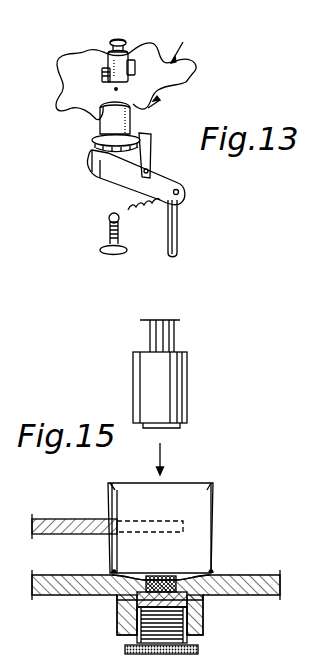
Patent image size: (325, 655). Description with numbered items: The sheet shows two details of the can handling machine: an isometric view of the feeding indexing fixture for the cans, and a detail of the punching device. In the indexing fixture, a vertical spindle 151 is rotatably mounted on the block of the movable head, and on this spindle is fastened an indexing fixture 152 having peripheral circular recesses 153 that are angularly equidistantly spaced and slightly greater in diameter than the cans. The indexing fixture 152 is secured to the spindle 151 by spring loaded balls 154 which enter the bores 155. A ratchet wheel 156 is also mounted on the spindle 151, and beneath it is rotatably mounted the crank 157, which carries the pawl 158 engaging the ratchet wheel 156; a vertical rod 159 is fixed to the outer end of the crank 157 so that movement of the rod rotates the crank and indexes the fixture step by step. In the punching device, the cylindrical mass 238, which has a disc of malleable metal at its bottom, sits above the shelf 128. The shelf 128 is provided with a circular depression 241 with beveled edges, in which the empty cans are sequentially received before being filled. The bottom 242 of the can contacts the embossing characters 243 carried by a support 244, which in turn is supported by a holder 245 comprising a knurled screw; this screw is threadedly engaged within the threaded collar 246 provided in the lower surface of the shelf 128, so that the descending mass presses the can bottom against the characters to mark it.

In FIG. 13, the vertical spindle 151 is at (127, 85).
In FIG. 13, the indexing fixture 152 is at (58, 68).
In FIG. 15, the indexing fixture 152 is at (53, 531).
In FIG. 13, the peripheral circular recesses 153 is at (64, 106).
In FIG. 13, the spring loaded balls 154 is at (105, 81).
In FIG. 13, the bores 155 is at (182, 72).
In FIG. 13, the ratchet wheel 156 is at (92, 145).
In FIG. 13, the crank 157 is at (172, 173).
In FIG. 13, the pawl 158 is at (141, 145).
In FIG. 13, the vertical rod 159 is at (173, 232).
In FIG. 15, the cylindrical mass 238 is at (186, 385).
In FIG. 15, the bottom of the can 242 is at (212, 518).
In FIG. 15, the embossing characters 243 is at (170, 573).
In FIG. 15, the support 244 is at (137, 609).
In FIG. 15, the holder 245 is at (124, 649).
In FIG. 15, the threaded collar 246 is at (203, 617).
In FIG. 15, the circular depression 241 is at (114, 576).
In FIG. 15, the shelf 128 is at (257, 575).